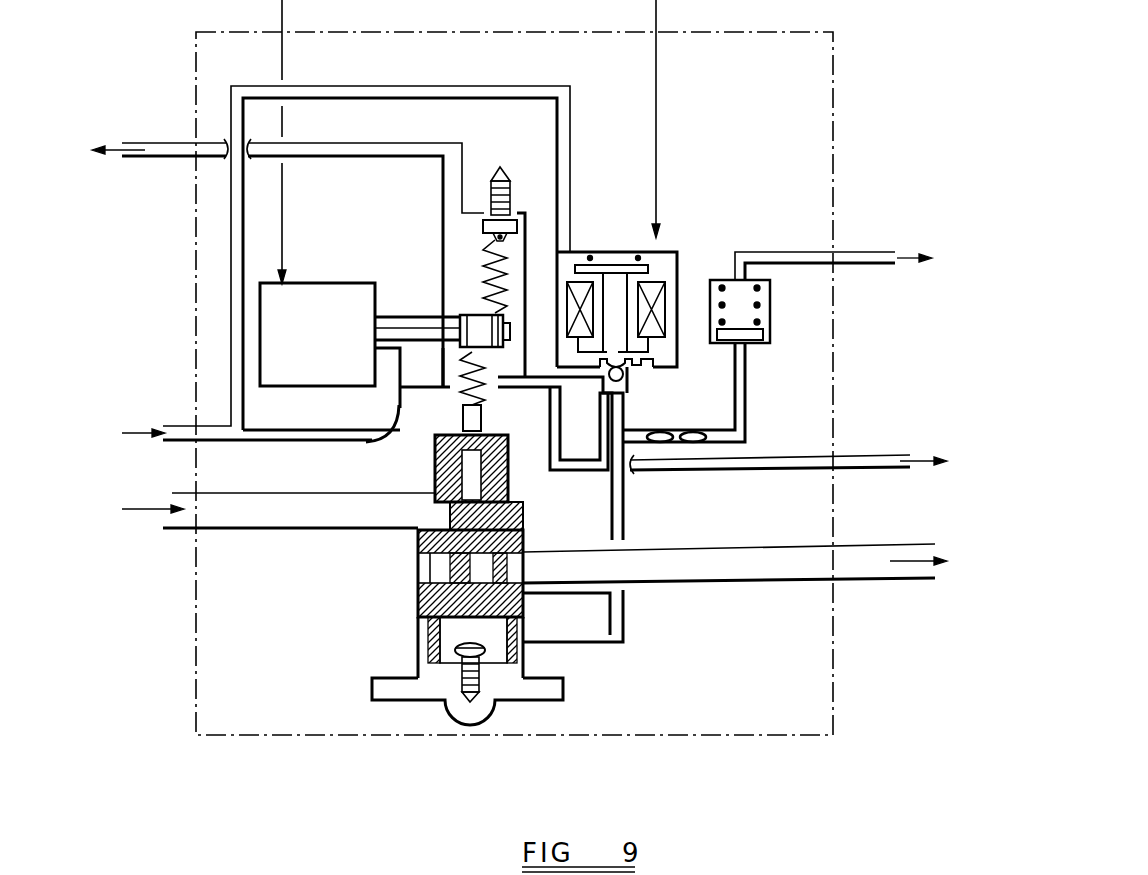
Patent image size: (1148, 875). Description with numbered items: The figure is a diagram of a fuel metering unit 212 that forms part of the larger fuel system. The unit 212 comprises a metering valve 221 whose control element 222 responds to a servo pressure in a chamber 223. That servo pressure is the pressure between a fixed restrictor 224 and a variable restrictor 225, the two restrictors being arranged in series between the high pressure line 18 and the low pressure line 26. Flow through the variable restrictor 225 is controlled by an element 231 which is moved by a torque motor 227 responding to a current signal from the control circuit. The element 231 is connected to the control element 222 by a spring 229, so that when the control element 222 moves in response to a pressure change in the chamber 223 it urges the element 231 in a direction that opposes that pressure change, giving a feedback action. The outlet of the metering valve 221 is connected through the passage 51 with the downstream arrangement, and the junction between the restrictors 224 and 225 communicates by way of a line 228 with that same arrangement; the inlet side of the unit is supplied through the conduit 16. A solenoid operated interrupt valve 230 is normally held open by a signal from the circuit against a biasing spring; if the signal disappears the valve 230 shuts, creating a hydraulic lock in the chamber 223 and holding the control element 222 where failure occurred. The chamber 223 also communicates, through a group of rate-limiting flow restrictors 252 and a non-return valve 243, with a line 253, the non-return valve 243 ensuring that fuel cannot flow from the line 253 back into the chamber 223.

The inlet conduit 16 is at (200, 510).
The high pressure line 18 is at (232, 403).
The low pressure line 26 is at (160, 145).
The passage 51 is at (887, 580).
The fuel metering unit 212 is at (325, 708).
The metering valve 221 is at (370, 567).
The control element 222 is at (520, 527).
The chamber 223 is at (440, 645).
The fixed restrictor 224 is at (364, 420).
The variable restrictor 225 is at (395, 315).
The torque motor 227 is at (302, 290).
The line 228 is at (886, 455).
The spring 229 is at (483, 392).
The solenoid operated interrupt valve 230 is at (678, 228).
The element 231 is at (428, 313).
The non-return valve 243 is at (756, 314).
The rate-limiting flow restrictors 252 is at (690, 445).
The line 253 is at (890, 252).